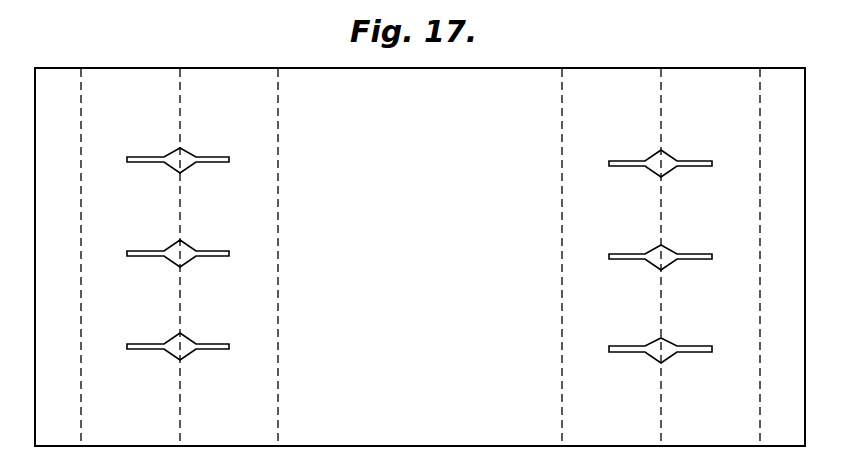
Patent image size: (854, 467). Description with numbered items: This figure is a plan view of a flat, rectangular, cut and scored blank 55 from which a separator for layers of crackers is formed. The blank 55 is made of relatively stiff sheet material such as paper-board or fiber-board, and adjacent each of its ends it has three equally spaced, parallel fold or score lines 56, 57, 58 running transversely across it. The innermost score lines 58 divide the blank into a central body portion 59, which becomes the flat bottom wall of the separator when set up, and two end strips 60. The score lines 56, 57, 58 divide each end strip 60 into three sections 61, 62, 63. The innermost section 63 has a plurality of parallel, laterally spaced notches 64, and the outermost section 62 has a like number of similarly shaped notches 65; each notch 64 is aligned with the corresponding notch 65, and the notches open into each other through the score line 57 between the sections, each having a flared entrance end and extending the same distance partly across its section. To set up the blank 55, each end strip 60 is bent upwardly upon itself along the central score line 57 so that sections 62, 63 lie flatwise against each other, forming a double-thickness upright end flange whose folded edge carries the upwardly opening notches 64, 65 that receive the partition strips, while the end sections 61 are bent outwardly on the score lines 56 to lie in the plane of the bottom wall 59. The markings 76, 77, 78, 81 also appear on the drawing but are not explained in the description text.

The blank 55 is at (530, 66).
The fold or score line 56 is at (83, 118).
The fold or score line 57 is at (183, 99).
The fold or score line 58 is at (280, 105).
The body portion 59 is at (465, 80).
The end strip 60 is at (146, 68).
The end section 61 is at (54, 78).
The outermost section 62 is at (110, 76).
The innermost section 63 is at (223, 78).
The notch 64 is at (208, 164).
The notch 65 is at (152, 164).
The panel 76 is at (130, 456).
The panel 77 is at (229, 456).
The panel 78 is at (607, 456).
The flap 81 is at (58, 456).